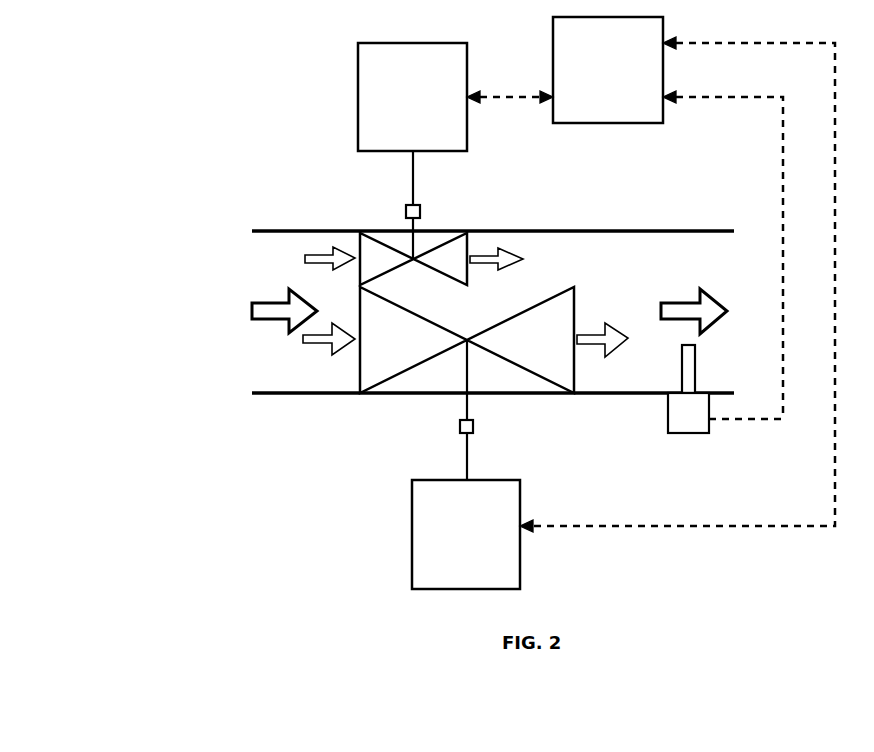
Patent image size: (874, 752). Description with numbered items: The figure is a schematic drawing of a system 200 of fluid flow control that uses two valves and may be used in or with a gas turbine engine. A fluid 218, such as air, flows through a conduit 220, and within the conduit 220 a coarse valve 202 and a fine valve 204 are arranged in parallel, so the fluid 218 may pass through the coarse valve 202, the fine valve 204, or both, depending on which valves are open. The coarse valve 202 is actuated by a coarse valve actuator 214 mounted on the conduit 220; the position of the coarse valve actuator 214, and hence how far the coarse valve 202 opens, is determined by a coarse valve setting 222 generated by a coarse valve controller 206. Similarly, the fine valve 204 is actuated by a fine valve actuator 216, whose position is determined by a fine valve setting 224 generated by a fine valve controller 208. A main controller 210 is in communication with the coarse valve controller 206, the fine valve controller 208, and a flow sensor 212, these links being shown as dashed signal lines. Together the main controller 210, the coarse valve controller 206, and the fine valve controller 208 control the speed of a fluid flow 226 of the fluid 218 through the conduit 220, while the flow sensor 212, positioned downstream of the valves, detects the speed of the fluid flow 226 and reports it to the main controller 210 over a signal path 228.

The system of fluid flow control 200 is at (110, 140).
The coarse valve 202 is at (380, 353).
The fine valve 204 is at (373, 258).
The coarse valve controller 206 is at (466, 534).
The fine valve controller 208 is at (412, 97).
The main controller 210 is at (608, 70).
The flow sensor 212 is at (697, 422).
The coarse valve actuator 214 is at (473, 427).
The fine valve actuator 216 is at (420, 212).
The fluid 218 is at (265, 245).
The conduit 220 is at (634, 229).
The coarse valve setting 222 is at (467, 460).
The fine valve setting 224 is at (413, 193).
The fluid flow 226 is at (257, 310).
The flow sensor signal line 228 is at (753, 419).